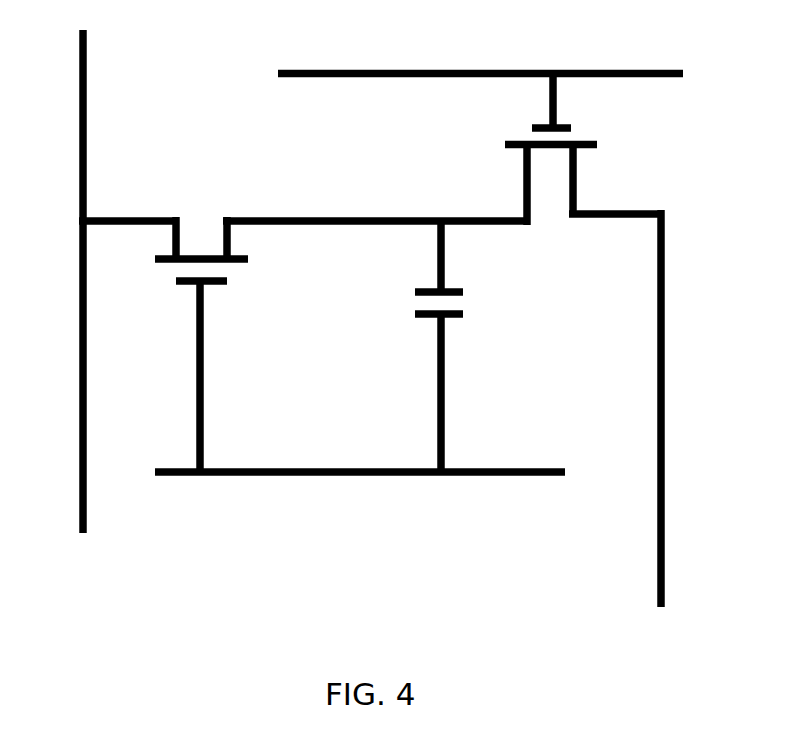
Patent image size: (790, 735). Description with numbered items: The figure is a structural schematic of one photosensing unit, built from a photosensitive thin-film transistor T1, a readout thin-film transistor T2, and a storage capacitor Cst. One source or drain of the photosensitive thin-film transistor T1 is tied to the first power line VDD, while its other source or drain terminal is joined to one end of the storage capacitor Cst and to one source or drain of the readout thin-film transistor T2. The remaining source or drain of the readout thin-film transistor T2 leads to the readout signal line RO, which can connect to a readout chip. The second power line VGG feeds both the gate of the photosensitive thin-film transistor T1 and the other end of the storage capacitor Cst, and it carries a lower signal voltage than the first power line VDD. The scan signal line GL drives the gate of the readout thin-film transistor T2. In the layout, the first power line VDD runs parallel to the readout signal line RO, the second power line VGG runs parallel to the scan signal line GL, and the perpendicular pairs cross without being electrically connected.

The first power line VDD is at (109, 304).
The scan signal line GL is at (454, 73).
The photosensitive thin-film transistor T1 is at (341, 344).
The readout thin-film transistor T2 is at (583, 149).
The storage capacitor Cst is at (459, 346).
The second power line VGG is at (360, 496).
The readout signal line RO is at (662, 430).